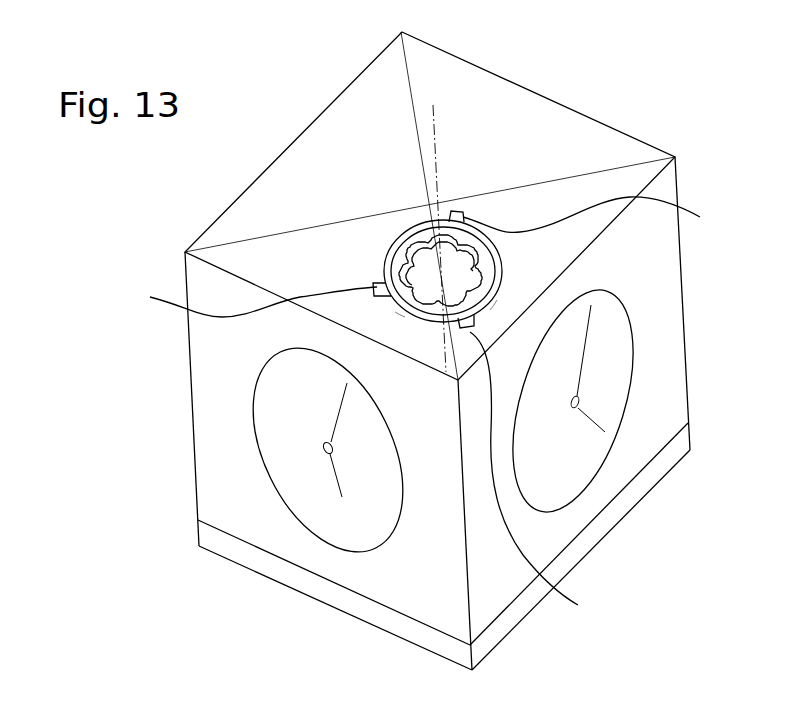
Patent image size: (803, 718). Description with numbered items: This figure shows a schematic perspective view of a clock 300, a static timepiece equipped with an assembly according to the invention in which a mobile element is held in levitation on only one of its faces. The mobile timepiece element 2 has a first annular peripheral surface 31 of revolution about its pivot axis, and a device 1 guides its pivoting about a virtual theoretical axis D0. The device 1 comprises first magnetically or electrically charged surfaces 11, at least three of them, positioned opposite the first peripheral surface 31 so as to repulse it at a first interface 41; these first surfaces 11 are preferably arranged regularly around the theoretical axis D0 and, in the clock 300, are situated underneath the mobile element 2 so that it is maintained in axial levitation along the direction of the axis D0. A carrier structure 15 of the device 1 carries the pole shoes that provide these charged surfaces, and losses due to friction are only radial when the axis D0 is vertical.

The device for guiding pivoting 1 is at (461, 202).
The mobile timepiece element 2 is at (418, 236).
The first magnetically or electrically charged surfaces 11 is at (465, 212).
The carrier structure 15 is at (423, 411).
The first annular peripheral surface 31 is at (404, 316).
The first interface 41 is at (494, 310).
The clock 300 is at (293, 550).
The theoretical axis D0 is at (434, 137).